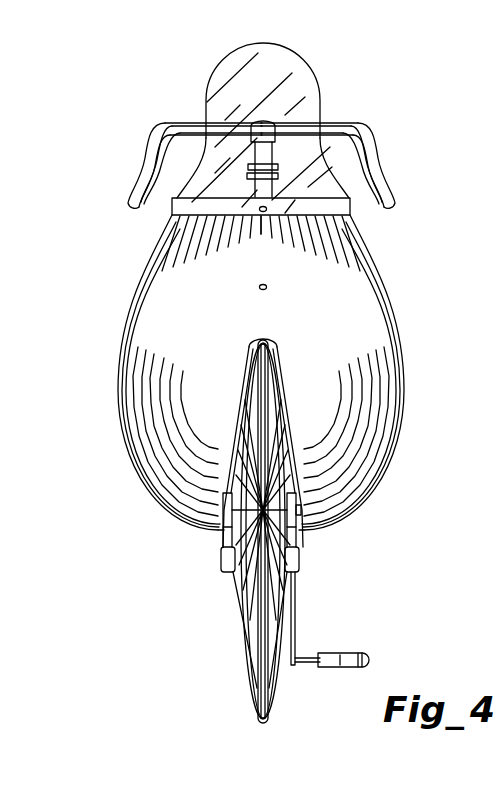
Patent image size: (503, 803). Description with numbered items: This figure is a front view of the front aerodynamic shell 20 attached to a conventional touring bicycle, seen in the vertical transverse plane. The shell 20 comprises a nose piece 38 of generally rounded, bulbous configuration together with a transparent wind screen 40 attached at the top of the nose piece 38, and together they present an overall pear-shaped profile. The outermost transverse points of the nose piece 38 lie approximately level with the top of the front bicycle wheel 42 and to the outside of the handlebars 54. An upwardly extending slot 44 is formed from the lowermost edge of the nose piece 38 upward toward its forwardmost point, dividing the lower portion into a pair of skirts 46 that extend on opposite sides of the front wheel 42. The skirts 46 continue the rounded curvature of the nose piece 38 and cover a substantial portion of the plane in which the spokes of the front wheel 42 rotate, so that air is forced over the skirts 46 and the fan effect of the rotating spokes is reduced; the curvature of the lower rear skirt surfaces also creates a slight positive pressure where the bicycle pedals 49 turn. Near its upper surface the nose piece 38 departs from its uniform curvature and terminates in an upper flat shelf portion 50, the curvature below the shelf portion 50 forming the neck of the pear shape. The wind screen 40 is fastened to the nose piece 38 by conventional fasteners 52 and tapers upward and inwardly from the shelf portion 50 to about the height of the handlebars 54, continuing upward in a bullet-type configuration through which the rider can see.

The front aerodynamic shell 20 is at (88, 323).
The nose piece 38 is at (398, 345).
The transparent wind screen 40 is at (297, 78).
The front bicycle wheel 42 is at (258, 688).
The upwardly extending slot 44 is at (240, 428).
The skirts 46 is at (152, 478).
The bicycle pedals 49 is at (345, 657).
The upper flat shelf portion 50 is at (172, 195).
The conventional fasteners 52 is at (263, 213).
The handlebars 54 is at (380, 155).